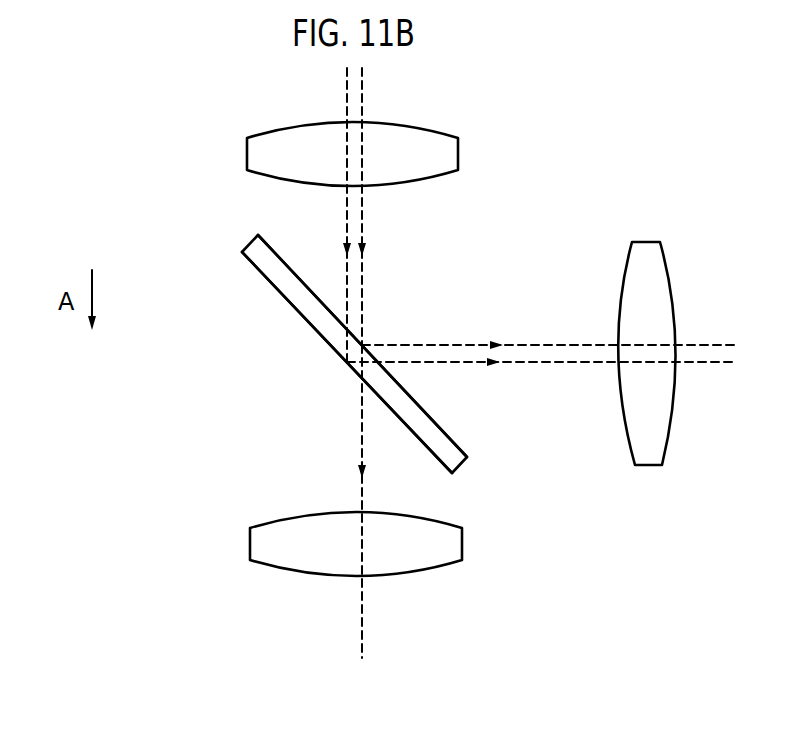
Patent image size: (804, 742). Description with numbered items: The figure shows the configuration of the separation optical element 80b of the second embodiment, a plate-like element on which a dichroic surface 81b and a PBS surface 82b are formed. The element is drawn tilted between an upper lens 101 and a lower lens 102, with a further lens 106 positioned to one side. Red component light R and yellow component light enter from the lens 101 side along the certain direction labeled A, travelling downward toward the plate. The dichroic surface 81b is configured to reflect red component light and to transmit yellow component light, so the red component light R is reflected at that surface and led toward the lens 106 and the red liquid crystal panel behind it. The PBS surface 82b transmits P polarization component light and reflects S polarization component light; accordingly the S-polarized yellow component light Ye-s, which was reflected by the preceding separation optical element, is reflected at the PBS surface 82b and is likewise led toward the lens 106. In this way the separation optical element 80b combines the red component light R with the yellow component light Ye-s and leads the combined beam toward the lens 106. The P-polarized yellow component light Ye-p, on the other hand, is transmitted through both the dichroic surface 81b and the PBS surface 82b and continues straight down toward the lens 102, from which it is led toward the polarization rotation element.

The separation optical element 80b is at (258, 251).
The dichroic surface 81b is at (278, 250).
The PBS surface 82b is at (262, 275).
The lens 101 is at (456, 150).
The lens 102 is at (454, 538).
The lens 106 is at (642, 256).
The red component light R is at (535, 343).
The yellow component light (S polarization component light) Ye-s is at (349, 283).
The yellow component light (P polarization component light) Ye-p is at (365, 213).